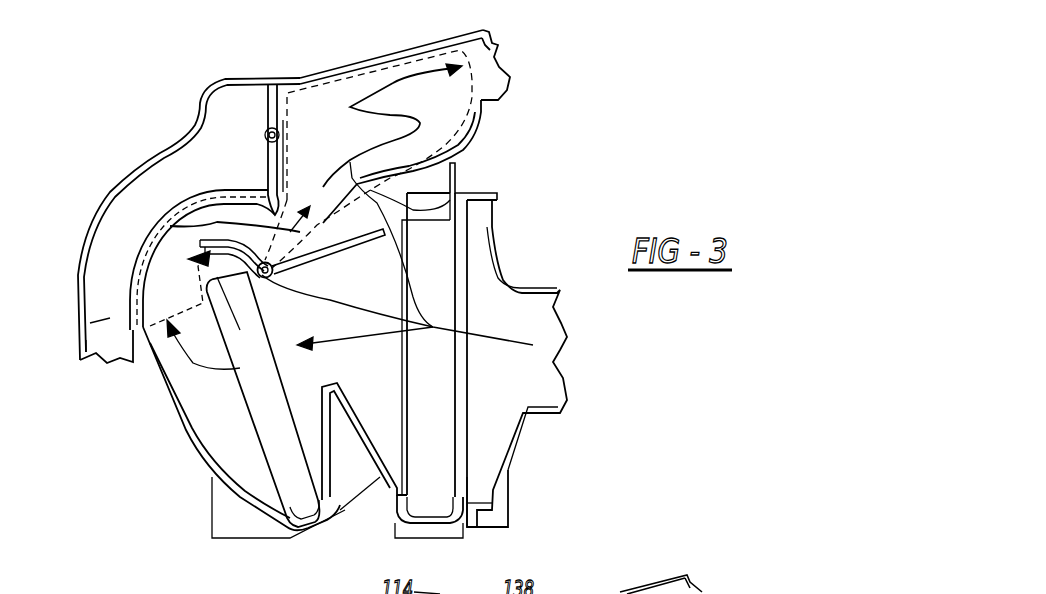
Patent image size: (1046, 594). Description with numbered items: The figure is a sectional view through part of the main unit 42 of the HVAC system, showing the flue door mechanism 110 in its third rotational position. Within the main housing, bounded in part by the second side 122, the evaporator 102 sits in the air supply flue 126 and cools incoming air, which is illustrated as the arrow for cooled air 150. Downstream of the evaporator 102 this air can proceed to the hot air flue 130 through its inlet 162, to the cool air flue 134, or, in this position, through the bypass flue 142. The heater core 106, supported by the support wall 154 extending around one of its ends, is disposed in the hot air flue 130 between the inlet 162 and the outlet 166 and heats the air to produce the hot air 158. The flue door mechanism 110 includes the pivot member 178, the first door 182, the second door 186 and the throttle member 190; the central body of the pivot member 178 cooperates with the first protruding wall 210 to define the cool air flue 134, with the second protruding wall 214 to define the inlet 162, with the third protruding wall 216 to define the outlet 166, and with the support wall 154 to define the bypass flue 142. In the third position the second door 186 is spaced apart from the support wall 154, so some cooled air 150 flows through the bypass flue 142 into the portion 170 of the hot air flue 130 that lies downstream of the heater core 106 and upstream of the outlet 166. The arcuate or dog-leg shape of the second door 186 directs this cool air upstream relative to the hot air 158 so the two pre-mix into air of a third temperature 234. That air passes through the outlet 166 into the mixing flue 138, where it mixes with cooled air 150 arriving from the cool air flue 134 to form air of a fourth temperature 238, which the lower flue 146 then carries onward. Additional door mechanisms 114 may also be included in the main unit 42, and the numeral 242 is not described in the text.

The main unit 42 is at (138, 84).
The evaporator 102 is at (437, 467).
The heater core 106 is at (277, 473).
The flue door mechanism 110 is at (267, 295).
The additional door mechanisms 114 is at (270, 128).
The second side 122 is at (228, 437).
The air supply flue 126 is at (533, 310).
The hot air flue 130 is at (210, 407).
The cool air flue 134 is at (410, 177).
The mixing flue 138 is at (331, 78).
The bypass flue 142 is at (195, 315).
The lower flue 146 is at (107, 320).
The cooled air 150 is at (433, 330).
The support wall 154 is at (203, 280).
The hot air 158 is at (175, 380).
The inlet 162 is at (227, 427).
The outlet 166 is at (291, 212).
The portion of the hot air flue 170 is at (145, 247).
The pivot member 178 is at (288, 276).
The first door 182 is at (335, 250).
The second door 186 is at (213, 236).
The throttle member 190 is at (320, 290).
The first protruding wall 210 is at (455, 195).
The second protruding wall 214 is at (257, 437).
The third protruding wall 216 is at (268, 195).
The air of the third temperature 234 is at (140, 247).
The air of the fourth temperature 238 is at (396, 88).
The air passage 242 is at (557, 592).